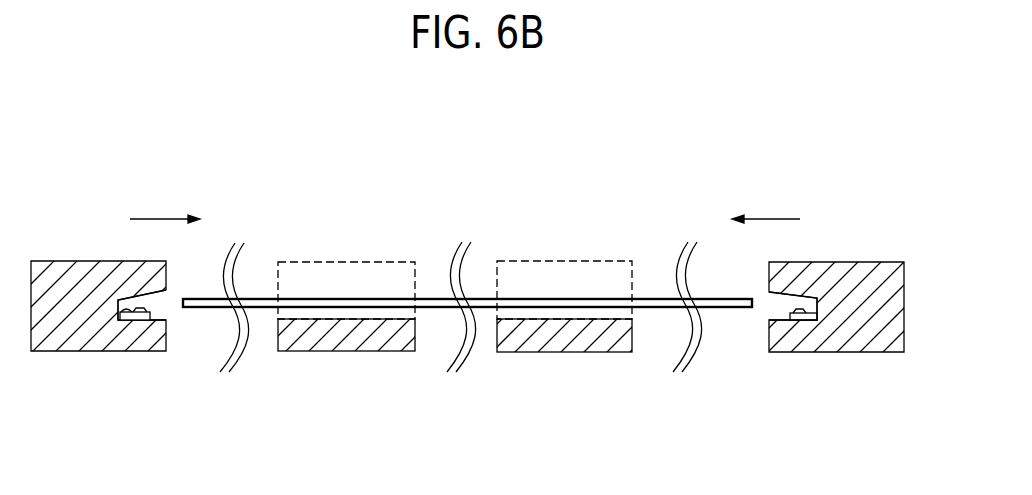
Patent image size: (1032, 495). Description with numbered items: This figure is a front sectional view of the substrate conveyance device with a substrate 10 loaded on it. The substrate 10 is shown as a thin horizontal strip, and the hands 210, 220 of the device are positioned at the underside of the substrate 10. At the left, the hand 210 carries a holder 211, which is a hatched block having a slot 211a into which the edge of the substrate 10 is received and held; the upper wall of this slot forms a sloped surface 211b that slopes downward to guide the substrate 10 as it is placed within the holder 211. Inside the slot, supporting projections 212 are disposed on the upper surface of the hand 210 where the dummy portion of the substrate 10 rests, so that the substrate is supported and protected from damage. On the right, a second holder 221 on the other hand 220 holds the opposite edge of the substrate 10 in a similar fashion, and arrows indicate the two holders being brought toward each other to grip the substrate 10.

The substrate 10 is at (650, 296).
The hand 210 is at (874, 246).
The holder 211 is at (73, 270).
The slot 211a is at (157, 304).
The sloped surface 211b is at (777, 299).
The supporting projection 212 is at (112, 321).
The hand 220 is at (347, 340).
The holder 221 is at (563, 260).